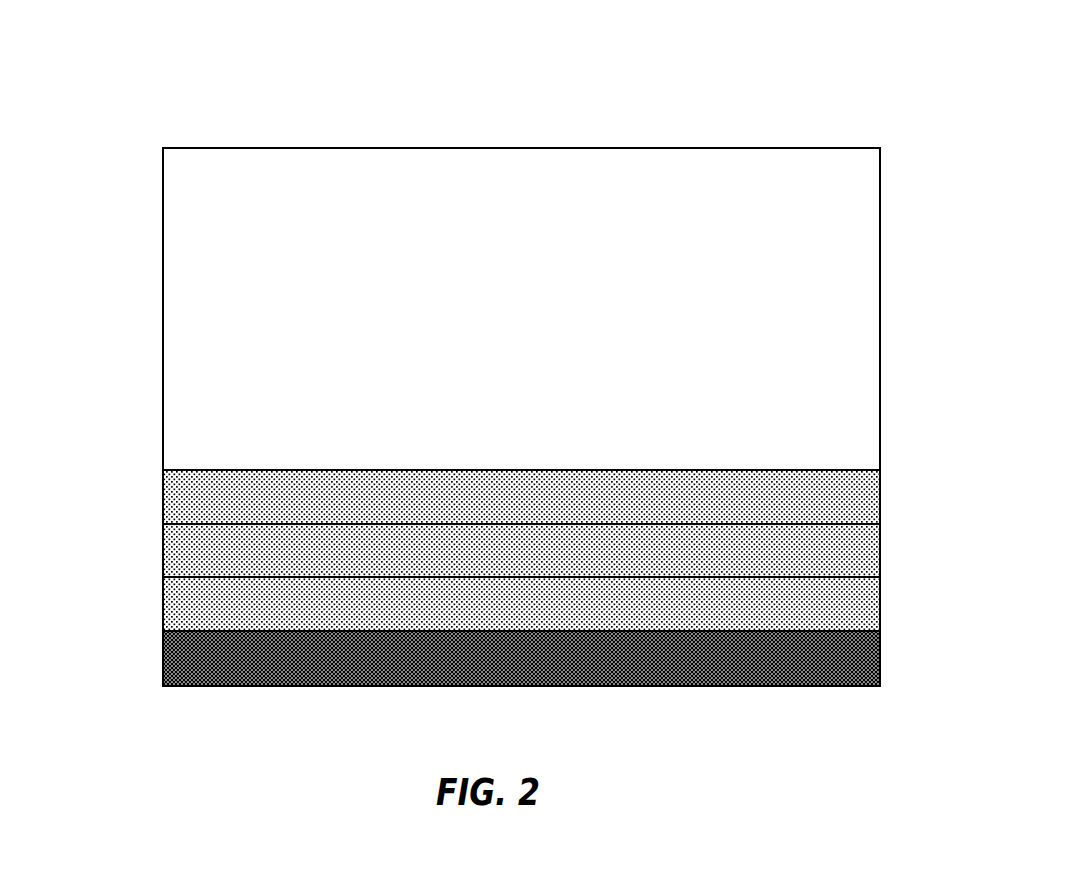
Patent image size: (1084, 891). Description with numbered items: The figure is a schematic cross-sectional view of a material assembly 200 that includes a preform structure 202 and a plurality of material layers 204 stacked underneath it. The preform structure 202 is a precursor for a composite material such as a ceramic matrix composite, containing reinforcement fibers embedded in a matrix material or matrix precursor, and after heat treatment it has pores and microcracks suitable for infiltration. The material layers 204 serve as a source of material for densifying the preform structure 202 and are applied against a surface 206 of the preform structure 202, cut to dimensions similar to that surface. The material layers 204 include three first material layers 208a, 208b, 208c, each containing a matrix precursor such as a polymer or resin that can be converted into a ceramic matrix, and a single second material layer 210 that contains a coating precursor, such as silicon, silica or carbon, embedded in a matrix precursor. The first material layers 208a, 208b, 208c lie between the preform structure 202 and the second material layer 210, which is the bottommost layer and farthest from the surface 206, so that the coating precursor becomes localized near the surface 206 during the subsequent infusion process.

The material assembly 200 is at (110, 96).
The preform structure 202 is at (873, 178).
The material layers 204 is at (517, 577).
The surface 206 is at (212, 462).
The first material layer 208a is at (873, 493).
The first material layer 208b is at (873, 545).
The first material layer 208c is at (873, 597).
The second material layer 210 is at (873, 650).